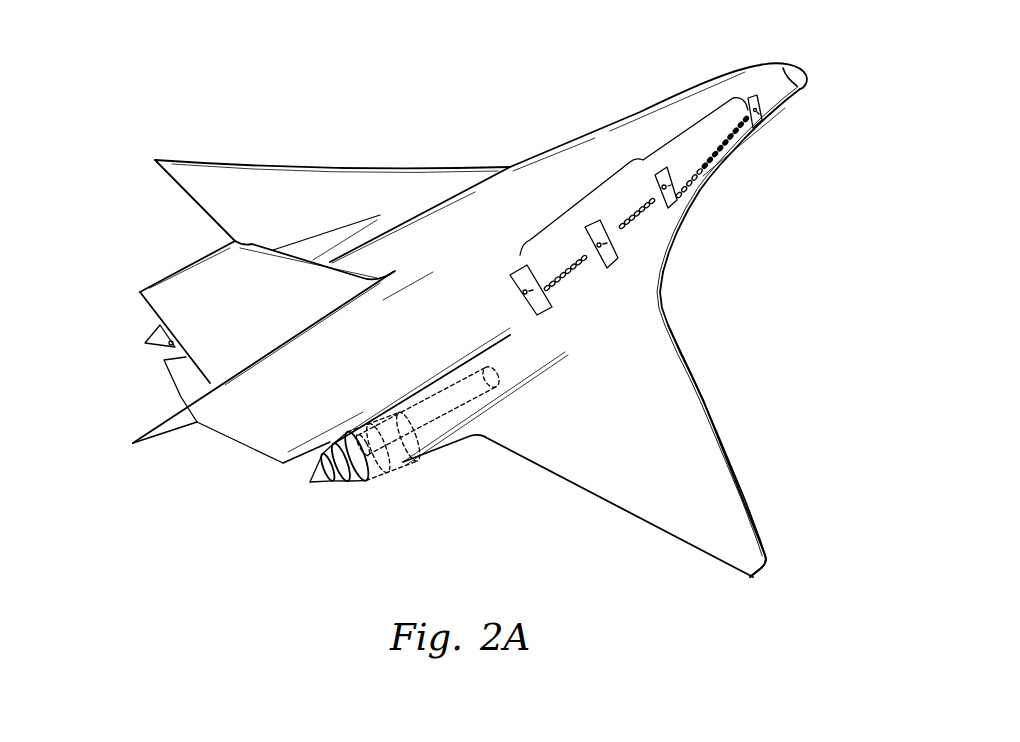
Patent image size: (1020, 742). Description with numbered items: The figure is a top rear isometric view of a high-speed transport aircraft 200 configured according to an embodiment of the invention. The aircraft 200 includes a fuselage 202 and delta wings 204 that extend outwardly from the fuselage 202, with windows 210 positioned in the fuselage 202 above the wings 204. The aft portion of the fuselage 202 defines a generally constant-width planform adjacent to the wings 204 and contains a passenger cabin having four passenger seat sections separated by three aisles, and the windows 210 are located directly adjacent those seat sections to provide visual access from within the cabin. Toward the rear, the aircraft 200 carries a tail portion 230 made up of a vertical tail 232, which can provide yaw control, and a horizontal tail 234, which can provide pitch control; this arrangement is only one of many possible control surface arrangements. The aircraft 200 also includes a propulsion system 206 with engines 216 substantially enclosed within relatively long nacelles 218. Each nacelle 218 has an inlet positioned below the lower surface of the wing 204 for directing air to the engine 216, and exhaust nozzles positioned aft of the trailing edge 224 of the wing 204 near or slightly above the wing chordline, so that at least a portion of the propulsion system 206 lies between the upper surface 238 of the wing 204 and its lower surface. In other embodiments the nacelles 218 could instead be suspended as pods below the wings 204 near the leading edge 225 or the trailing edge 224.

The high-speed aircraft 200 is at (793, 274).
The fuselage 202 is at (725, 80).
The delta wings 204 is at (289, 180).
The propulsion system 206 is at (285, 497).
The windows 210 is at (633, 158).
The engines 216 is at (402, 464).
The nacelles 218 is at (458, 365).
The trailing edge 224 is at (658, 528).
The leading edge 225 is at (717, 423).
The tail portion 230 is at (133, 274).
The vertical tail 232 is at (183, 270).
The horizontal tail 234 is at (260, 433).
The upper surface 238 is at (740, 550).